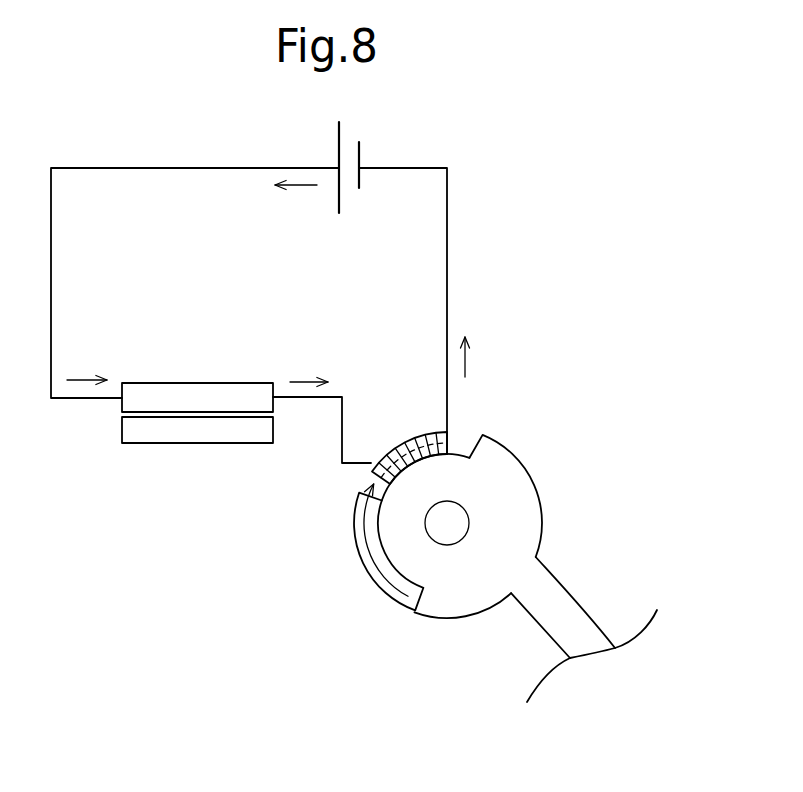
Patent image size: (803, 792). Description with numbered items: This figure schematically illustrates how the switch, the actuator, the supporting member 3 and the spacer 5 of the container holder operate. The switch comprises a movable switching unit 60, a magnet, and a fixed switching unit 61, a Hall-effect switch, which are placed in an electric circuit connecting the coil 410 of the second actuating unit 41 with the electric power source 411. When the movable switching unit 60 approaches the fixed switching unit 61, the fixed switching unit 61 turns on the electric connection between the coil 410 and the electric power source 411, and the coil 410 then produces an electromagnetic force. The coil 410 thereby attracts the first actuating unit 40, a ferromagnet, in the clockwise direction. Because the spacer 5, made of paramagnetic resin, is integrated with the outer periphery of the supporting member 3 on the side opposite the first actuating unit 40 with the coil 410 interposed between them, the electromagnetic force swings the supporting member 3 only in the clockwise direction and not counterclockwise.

The supporting member 3 is at (581, 547).
The spacer 5 is at (502, 475).
The first actuating unit 40 is at (379, 587).
The second actuating unit 41 is at (465, 250).
The movable switching unit 60 is at (188, 435).
The fixed switching unit 61 is at (185, 392).
The coil 410 is at (423, 435).
The electric power source 411 is at (359, 152).